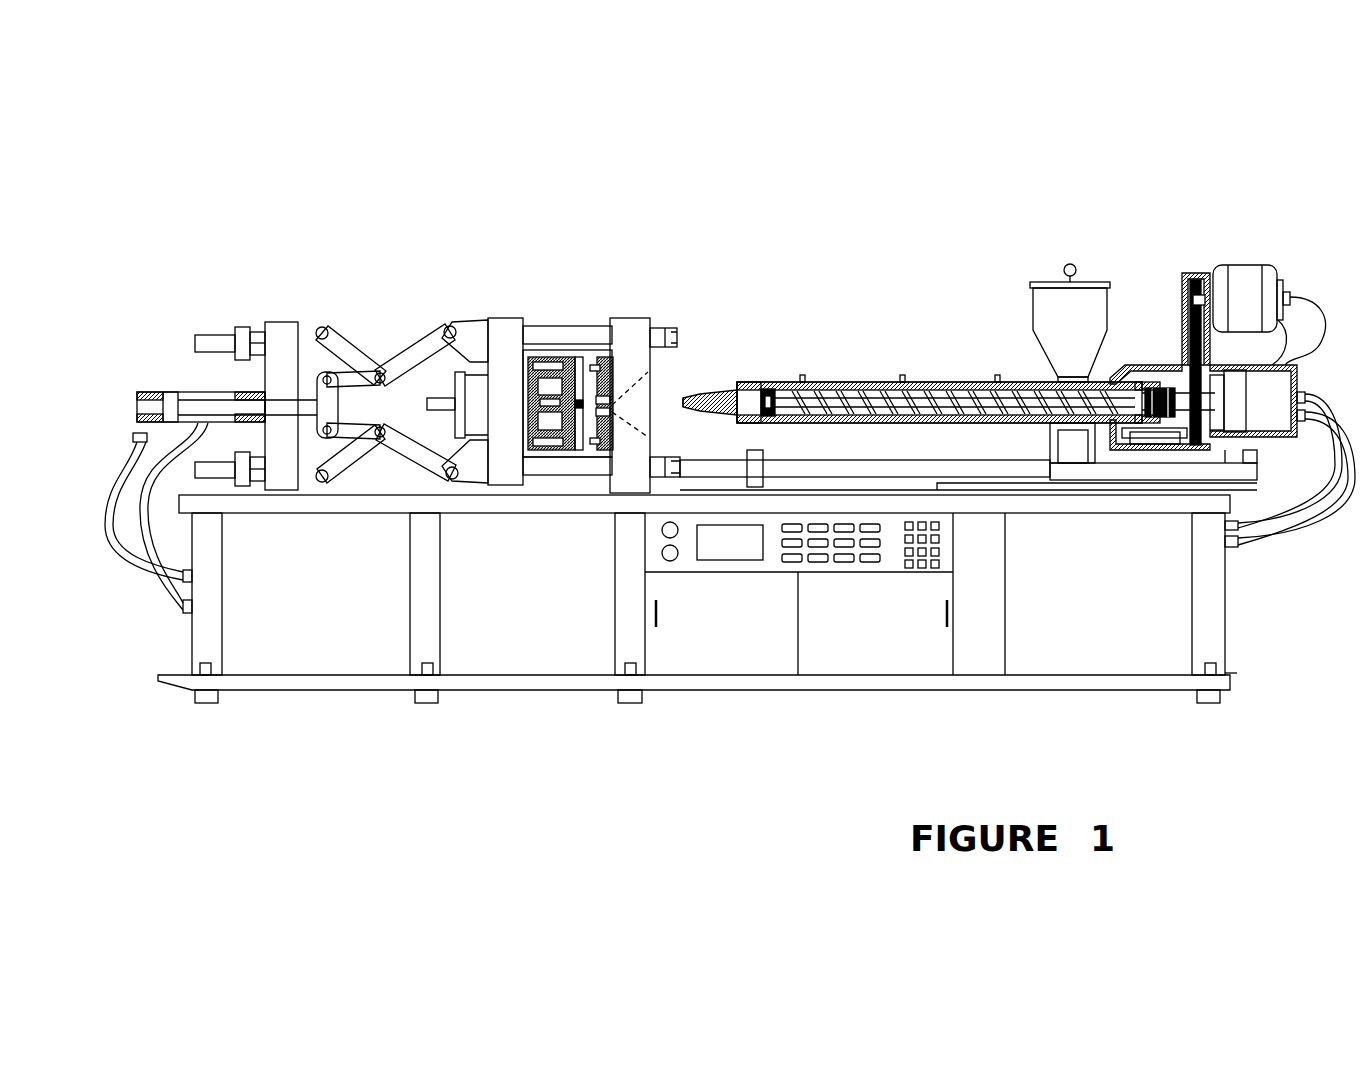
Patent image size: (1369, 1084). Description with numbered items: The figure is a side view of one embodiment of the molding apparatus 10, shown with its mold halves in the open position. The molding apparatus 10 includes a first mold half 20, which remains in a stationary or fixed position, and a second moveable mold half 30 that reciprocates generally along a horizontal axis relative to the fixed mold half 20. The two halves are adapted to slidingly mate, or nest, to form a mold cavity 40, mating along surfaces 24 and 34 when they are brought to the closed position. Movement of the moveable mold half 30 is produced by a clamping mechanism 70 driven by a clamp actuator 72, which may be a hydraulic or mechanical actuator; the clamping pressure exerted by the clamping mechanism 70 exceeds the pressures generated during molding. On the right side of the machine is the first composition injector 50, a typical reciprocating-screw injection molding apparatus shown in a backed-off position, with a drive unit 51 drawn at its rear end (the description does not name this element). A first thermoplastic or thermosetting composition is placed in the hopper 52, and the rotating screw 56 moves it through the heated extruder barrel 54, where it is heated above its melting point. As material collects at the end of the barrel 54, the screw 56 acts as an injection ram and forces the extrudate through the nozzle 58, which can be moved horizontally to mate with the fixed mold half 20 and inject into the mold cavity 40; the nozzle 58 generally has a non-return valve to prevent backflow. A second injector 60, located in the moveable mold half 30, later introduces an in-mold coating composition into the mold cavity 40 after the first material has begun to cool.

The molding apparatus 10 is at (698, 694).
The first mold half 20 is at (612, 348).
The mating surface 24 is at (595, 350).
The second moveable mold half 30 is at (541, 322).
The mating surface 34 is at (577, 352).
The mold cavity 40 is at (600, 412).
The first composition injector 50 is at (948, 382).
The motor 51 is at (1278, 265).
The hopper 52 is at (1030, 280).
The heated extruder barrel 54 is at (903, 381).
The rotating screw 56 is at (841, 383).
The nozzle 58 is at (716, 386).
The second injector 60 is at (545, 452).
The clamping mechanism 70 is at (287, 320).
The clamp actuator 72 is at (173, 395).